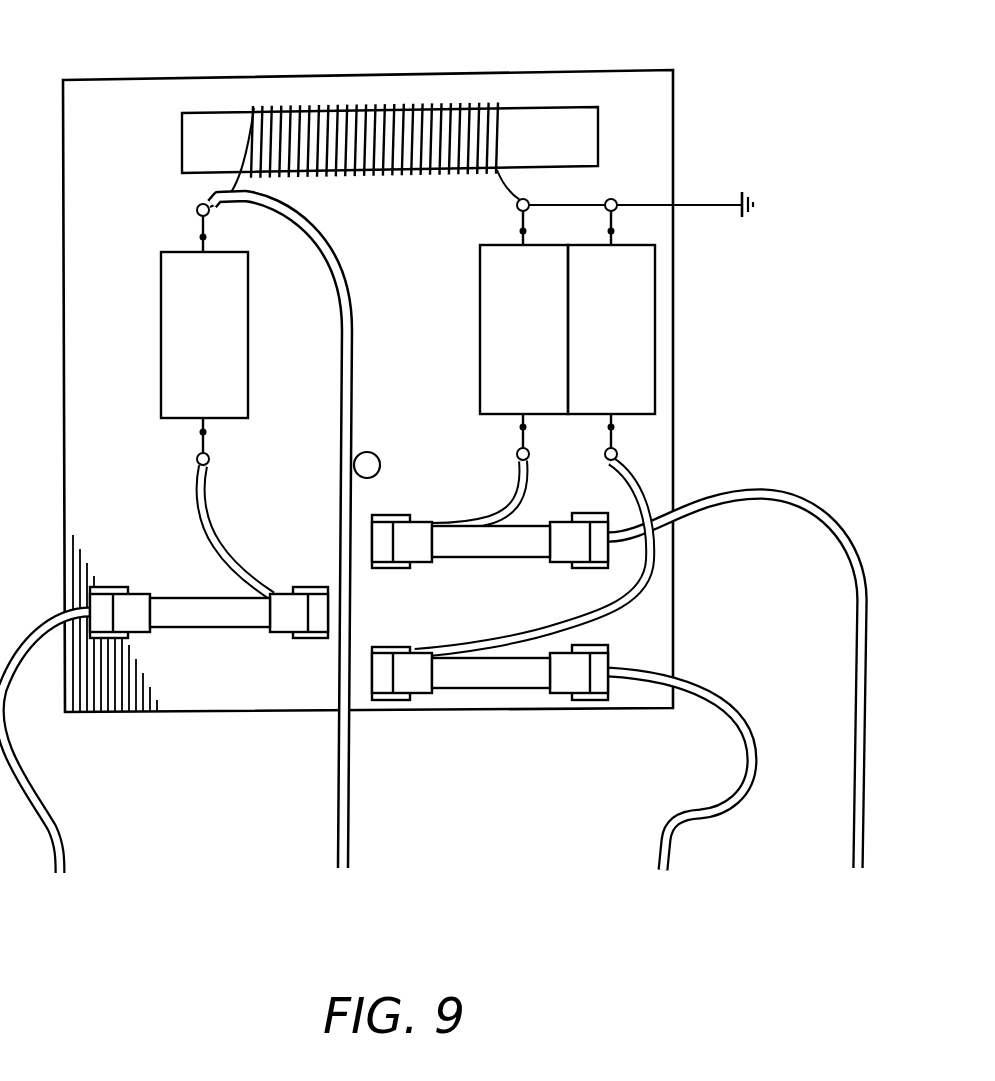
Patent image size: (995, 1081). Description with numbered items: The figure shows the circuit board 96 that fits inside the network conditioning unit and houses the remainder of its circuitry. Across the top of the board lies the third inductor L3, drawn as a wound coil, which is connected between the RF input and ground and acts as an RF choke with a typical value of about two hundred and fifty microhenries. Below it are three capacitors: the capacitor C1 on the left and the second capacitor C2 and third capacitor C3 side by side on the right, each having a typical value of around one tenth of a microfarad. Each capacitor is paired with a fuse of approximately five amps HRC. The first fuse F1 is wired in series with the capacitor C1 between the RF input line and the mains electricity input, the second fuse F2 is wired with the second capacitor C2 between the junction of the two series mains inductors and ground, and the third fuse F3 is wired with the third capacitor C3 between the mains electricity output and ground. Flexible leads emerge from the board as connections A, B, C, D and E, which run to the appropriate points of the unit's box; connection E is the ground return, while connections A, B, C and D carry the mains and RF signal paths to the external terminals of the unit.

The circuit board 96 is at (533, 34).
The third inductor L3 is at (390, 159).
The capacitor C1 is at (204, 334).
The second capacitor C2 is at (524, 329).
The third capacitor C3 is at (611, 329).
The first fuse F1 is at (209, 596).
The second fuse F2 is at (490, 525).
The third fuse F3 is at (490, 652).
The connection A is at (739, 699).
The connection B is at (45, 762).
The connection C is at (283, 554).
The connection D is at (680, 788).
The connection E is at (648, 204).